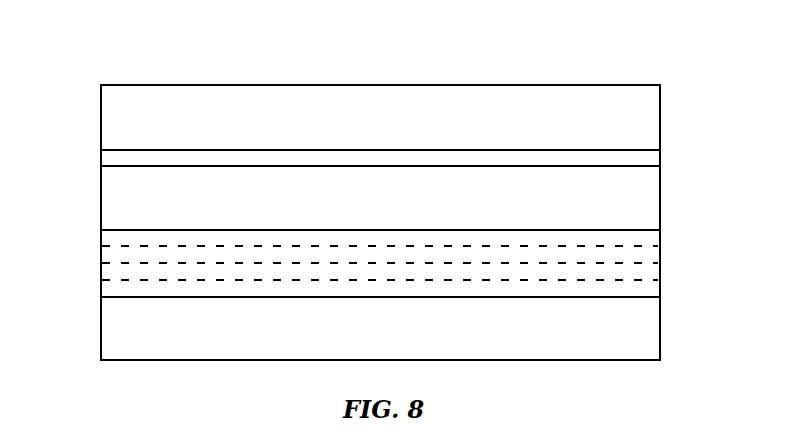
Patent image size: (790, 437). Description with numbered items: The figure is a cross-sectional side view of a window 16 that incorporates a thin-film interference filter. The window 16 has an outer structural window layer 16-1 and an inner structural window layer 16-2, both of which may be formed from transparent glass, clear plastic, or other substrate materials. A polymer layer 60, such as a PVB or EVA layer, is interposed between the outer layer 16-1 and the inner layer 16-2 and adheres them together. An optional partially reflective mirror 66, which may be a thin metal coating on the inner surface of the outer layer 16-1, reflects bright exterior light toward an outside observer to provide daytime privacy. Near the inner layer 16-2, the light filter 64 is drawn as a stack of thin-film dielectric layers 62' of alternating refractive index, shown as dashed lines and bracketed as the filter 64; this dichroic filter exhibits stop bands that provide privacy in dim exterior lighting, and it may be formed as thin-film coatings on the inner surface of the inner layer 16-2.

The window 16 is at (555, 50).
The outer structural window layer 16-1 is at (113, 116).
The partially reflective mirror 66 is at (113, 158).
The polymer layer 60 is at (113, 193).
The light filter 64 is at (674, 230).
The dashed layers 62' is at (354, 267).
The inner structural window layer 16-2 is at (113, 326).